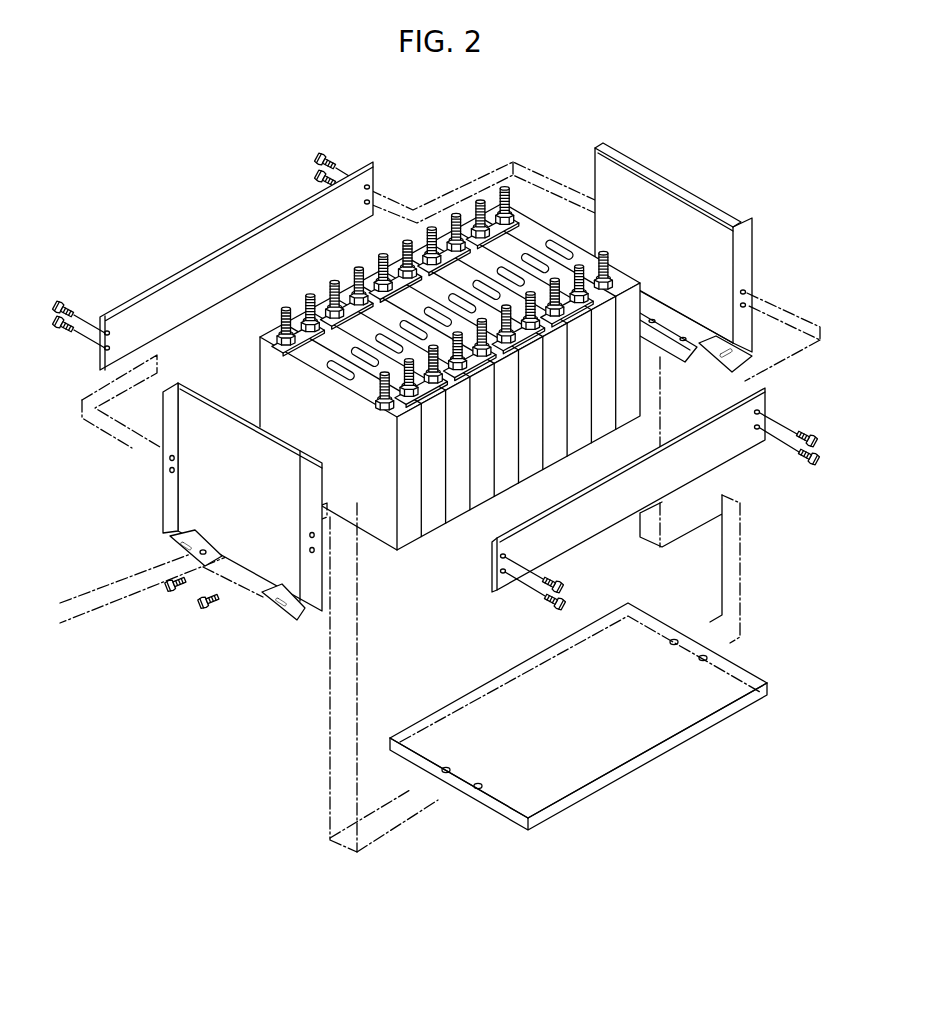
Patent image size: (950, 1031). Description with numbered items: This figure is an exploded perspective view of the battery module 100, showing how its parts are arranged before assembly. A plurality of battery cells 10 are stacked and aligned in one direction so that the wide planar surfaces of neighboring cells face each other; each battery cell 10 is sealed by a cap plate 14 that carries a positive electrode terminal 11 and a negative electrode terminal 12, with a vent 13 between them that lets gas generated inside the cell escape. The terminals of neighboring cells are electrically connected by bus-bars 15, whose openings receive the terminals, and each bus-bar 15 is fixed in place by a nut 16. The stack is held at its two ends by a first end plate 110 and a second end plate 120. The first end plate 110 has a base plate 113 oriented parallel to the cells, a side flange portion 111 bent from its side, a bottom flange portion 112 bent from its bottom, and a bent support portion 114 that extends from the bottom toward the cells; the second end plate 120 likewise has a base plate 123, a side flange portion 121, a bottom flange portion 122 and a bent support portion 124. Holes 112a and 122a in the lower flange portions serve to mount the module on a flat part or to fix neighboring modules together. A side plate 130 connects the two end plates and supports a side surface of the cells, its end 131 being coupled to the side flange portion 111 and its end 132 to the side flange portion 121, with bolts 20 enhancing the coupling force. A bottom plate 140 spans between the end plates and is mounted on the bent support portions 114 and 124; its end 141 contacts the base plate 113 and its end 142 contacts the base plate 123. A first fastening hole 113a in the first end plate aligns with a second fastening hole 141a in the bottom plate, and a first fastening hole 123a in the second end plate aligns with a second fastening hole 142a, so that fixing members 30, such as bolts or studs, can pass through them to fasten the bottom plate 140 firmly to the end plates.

The battery module 100 is at (190, 158).
The battery cell 10 is at (455, 470).
The positive electrode terminal 11 is at (500, 188).
The negative electrode terminal 12 is at (610, 250).
The vent 13 is at (549, 244).
The cap plate 14 is at (523, 233).
The bus-bar 15 is at (300, 321).
The nut 16 is at (329, 299).
The bolt 20 is at (563, 600).
The fixing member 30 is at (205, 606).
The first end plate 110 is at (159, 510).
The side flange portion 111 is at (310, 477).
The bottom flange portion 112 is at (277, 614).
The hole 112a is at (186, 556).
The base plate 113 is at (191, 531).
The first fastening hole 113a is at (263, 575).
The bent support portion 114 is at (260, 584).
The second end plate 120 is at (760, 245).
The side flange portion 121 is at (612, 153).
The bottom flange portion 122 is at (747, 362).
The hole 122a is at (797, 317).
The base plate 123 is at (685, 215).
The first fastening hole 123a is at (681, 337).
The bent support portion 124 is at (677, 364).
The side plate 130 is at (231, 238).
The end of side plate 131 is at (104, 328).
The end of side plate 132 is at (375, 166).
The bottom plate 140 is at (655, 770).
The end of bottom plate 141 is at (500, 810).
The second fastening hole 141a is at (476, 789).
The end of bottom plate 142 is at (770, 690).
The second fastening hole 142a is at (706, 656).